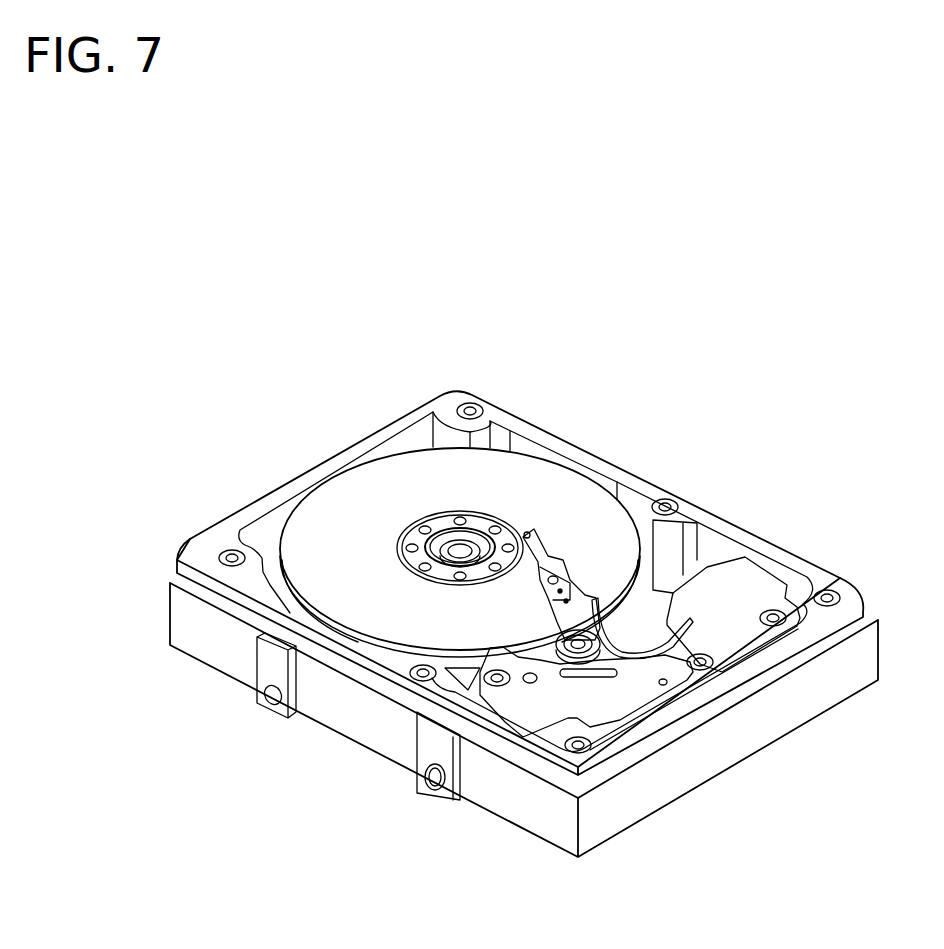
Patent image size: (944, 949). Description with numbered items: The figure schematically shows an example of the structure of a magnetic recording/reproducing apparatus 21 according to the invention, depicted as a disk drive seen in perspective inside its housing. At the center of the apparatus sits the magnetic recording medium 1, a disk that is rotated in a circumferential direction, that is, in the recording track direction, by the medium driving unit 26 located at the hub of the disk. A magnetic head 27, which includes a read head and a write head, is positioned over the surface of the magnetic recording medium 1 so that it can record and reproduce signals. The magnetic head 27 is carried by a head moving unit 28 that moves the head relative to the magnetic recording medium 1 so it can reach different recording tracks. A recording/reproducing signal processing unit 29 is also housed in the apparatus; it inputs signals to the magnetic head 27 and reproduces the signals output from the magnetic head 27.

The magnetic recording/reproducing apparatus 21 is at (266, 310).
The magnetic recording medium 1 is at (513, 490).
The medium driving unit 26 is at (407, 527).
The magnetic head 27 is at (527, 533).
The head moving unit 28 is at (598, 685).
The recording/reproducing signal processing unit 29 is at (753, 597).